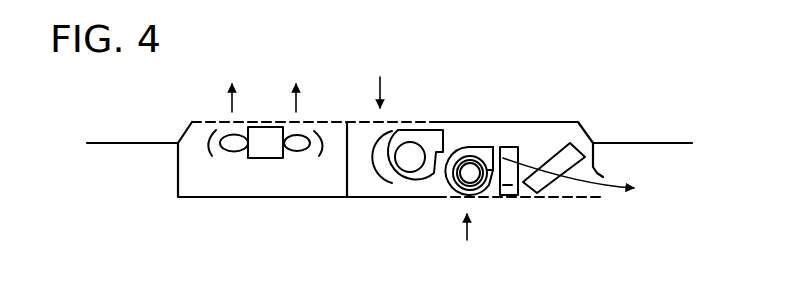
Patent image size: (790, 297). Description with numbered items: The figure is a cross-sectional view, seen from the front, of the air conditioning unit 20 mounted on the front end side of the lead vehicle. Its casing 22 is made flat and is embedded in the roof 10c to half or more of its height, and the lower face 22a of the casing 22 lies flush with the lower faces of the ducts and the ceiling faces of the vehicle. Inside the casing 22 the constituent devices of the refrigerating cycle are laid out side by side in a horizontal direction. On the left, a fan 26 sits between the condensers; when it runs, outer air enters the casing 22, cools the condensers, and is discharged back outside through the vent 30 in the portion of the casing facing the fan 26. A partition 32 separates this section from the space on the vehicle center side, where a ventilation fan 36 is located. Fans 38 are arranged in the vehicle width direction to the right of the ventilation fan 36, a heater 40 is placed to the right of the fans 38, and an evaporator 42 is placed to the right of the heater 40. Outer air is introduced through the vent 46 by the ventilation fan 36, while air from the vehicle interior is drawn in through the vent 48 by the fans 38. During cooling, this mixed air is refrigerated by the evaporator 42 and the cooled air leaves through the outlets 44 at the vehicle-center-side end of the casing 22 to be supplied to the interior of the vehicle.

The roof 10c is at (623, 143).
The air conditioning unit 20 is at (446, 107).
The casing 22 is at (510, 121).
The lower face 22a is at (197, 199).
The fan 26 is at (262, 135).
The vent 30 is at (318, 122).
The partition 32 is at (346, 180).
The ventilation fan 36 is at (386, 183).
The fans 38 is at (478, 193).
The heater 40 is at (510, 197).
The evaporator 42 is at (548, 180).
The outlets 44 is at (603, 177).
The vent 46 is at (400, 122).
The vent 48 is at (451, 198).